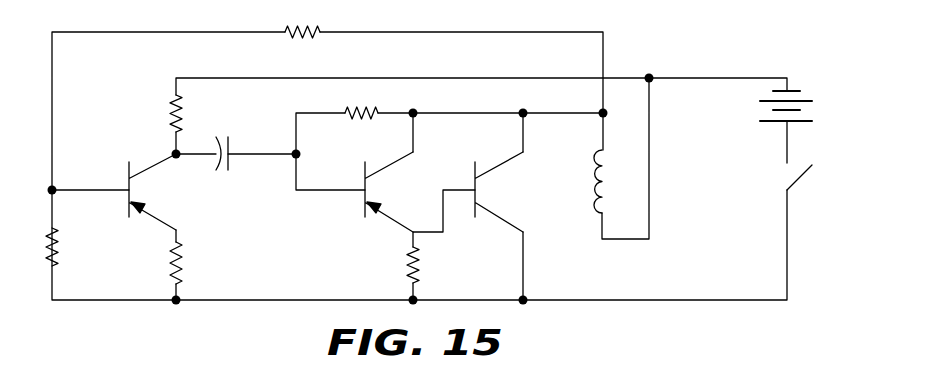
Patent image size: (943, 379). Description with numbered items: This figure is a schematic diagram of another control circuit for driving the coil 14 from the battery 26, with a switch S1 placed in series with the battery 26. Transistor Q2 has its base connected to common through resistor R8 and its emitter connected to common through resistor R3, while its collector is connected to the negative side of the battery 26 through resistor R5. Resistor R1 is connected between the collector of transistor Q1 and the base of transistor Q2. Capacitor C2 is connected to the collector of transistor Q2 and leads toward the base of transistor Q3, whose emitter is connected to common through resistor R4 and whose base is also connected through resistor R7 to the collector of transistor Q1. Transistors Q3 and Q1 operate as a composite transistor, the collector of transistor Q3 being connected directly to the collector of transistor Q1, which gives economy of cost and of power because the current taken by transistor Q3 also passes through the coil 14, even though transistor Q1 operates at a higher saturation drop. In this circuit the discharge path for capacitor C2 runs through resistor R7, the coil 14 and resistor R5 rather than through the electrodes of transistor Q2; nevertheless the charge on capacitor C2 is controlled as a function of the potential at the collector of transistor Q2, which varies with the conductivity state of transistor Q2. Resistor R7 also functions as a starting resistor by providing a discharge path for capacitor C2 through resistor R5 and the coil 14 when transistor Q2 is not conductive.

The resistor R1 is at (313, 29).
The resistor R5 is at (183, 101).
The resistor R8 is at (58, 262).
The resistor R3 is at (183, 261).
The resistor R7 is at (353, 118).
The resistor R4 is at (420, 260).
The transistor Q2 is at (140, 190).
The capacitor C2 is at (222, 171).
The transistor Q3 is at (375, 190).
The transistor Q1 is at (485, 193).
The coil 14 is at (593, 212).
The battery 26 is at (806, 116).
The switch S1 is at (803, 183).